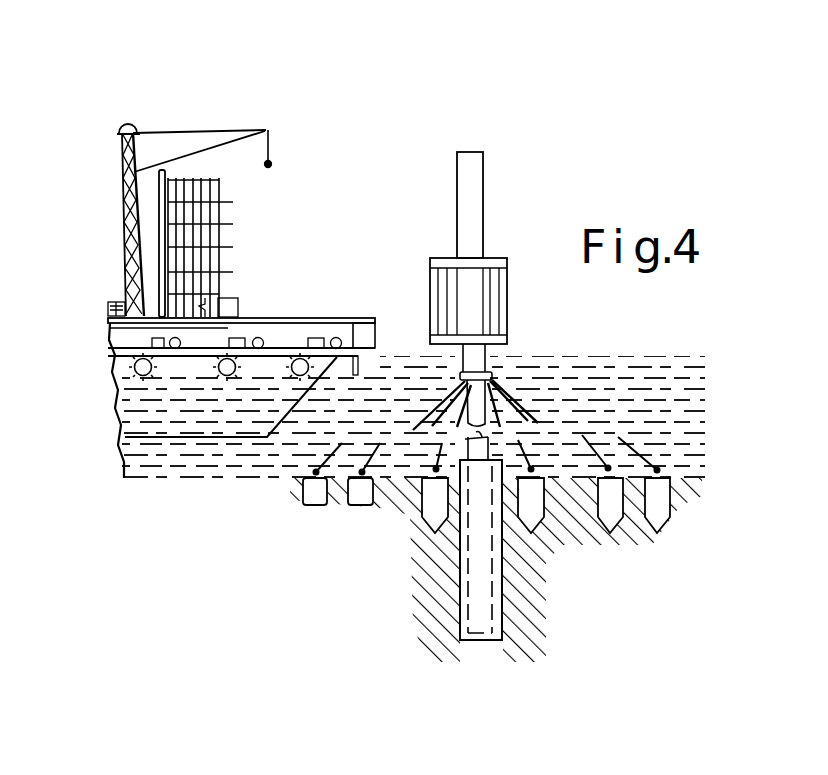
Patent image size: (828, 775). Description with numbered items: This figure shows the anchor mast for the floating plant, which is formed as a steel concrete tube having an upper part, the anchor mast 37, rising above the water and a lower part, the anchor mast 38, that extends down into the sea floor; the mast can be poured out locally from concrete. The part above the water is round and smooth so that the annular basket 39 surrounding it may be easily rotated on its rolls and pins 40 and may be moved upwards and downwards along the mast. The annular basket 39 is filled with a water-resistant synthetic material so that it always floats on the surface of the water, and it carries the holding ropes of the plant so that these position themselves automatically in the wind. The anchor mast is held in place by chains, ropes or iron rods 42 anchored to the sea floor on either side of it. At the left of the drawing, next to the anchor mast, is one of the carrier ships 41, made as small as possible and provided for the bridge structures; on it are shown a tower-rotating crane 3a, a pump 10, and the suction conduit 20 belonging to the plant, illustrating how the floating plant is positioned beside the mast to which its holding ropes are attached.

The tower-rotating crane 3a is at (127, 252).
The pump 10 is at (240, 298).
The suction conduit 20 is at (250, 334).
The anchor mast 37 is at (477, 215).
The anchor mast 38 is at (482, 556).
The annular basket 39 is at (430, 266).
The rolls and pins 40 is at (460, 335).
The carrier ship 41 is at (150, 395).
The chains, ropes or iron rods 42 is at (590, 440).